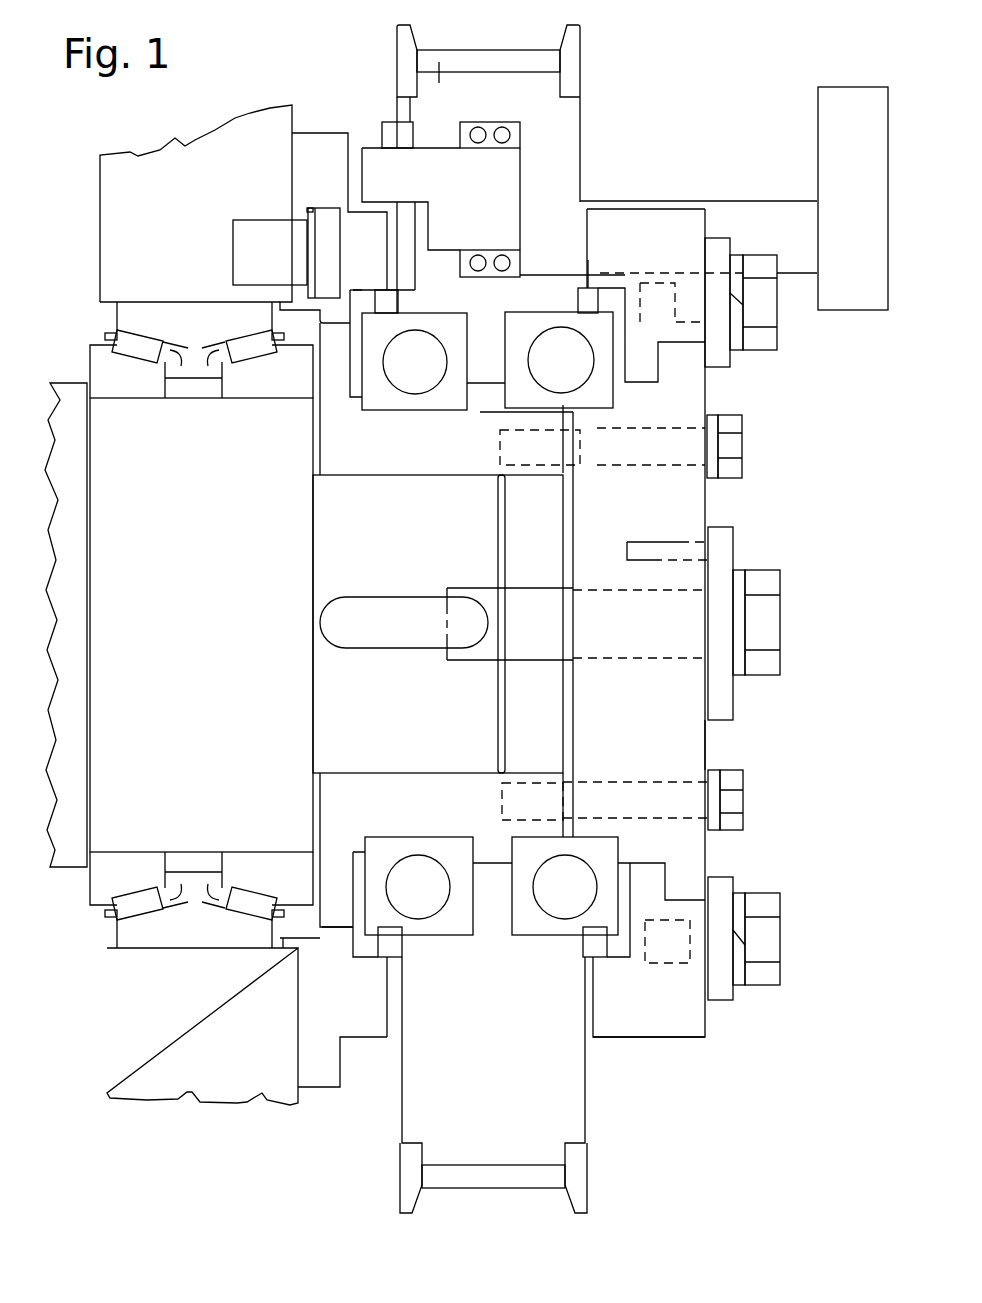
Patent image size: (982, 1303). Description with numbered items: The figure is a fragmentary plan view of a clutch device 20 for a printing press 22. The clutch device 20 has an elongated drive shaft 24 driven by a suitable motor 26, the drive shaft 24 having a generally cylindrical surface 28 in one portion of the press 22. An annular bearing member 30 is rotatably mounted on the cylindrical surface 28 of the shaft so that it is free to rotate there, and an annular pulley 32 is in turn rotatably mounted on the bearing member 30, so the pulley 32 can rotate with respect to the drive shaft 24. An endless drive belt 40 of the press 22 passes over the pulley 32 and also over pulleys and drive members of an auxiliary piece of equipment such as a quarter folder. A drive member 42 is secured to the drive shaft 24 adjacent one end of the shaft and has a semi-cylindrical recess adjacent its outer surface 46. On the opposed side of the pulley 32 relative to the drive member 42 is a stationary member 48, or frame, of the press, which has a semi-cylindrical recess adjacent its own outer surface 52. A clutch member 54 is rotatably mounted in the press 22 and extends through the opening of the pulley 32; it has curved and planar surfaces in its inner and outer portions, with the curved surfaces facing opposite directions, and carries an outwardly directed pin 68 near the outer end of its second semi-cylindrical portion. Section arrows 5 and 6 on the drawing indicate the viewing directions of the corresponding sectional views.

The clutch device 20 is at (740, 747).
The printing press 22 is at (196, 1102).
The drive shaft 24 is at (105, 823).
The motor 26 is at (65, 383).
The cylindrical surface 28 is at (388, 412).
The bearing member 30 is at (428, 412).
The pulley 32 is at (580, 43).
The drive belt 40 is at (408, 110).
The drive member 42 is at (675, 510).
The outer surface 46 is at (682, 208).
The stationary member 48 is at (325, 133).
The outer surface 52 is at (317, 130).
The clutch member 54 is at (786, 200).
The pin 68 is at (415, 135).
The section line 5 is at (670, 223).
The section line 6 is at (372, 163).